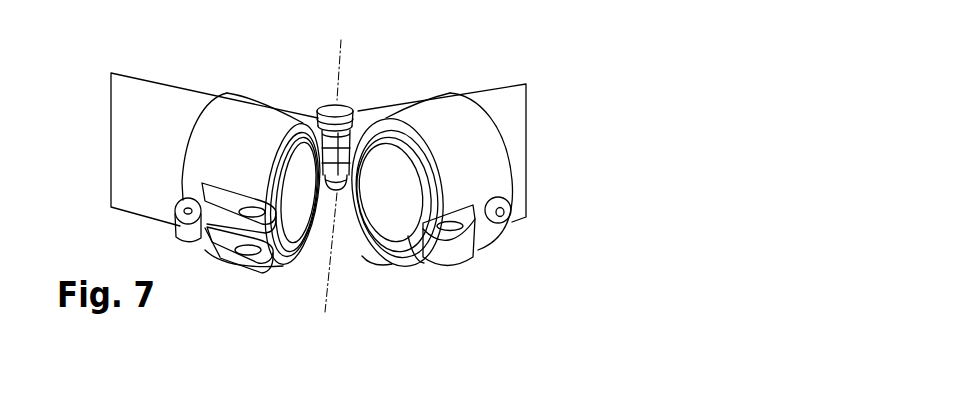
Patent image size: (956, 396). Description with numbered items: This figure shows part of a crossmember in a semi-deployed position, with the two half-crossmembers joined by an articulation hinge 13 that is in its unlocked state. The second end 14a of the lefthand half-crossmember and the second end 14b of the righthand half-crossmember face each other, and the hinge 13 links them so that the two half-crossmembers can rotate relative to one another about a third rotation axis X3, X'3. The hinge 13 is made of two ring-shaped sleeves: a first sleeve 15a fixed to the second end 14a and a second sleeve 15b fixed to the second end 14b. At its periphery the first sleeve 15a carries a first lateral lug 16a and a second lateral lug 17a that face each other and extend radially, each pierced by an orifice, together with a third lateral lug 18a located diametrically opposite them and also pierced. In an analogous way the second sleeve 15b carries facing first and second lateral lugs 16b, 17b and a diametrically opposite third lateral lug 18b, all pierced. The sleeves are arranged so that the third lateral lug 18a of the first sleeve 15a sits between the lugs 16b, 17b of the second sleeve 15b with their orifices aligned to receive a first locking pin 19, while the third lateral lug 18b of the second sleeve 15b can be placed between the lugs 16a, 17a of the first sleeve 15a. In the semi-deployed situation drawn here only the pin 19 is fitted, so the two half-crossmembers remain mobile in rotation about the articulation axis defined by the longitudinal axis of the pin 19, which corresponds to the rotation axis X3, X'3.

The articulation hinge 13 is at (518, 238).
The second end of the first half-crossmember 14a is at (167, 117).
The second end of the second half-crossmember 14b is at (513, 123).
The first sleeve 15a is at (268, 125).
The second sleeve 15b is at (427, 123).
The first lateral lug of the first sleeve 16a is at (210, 257).
The first lateral lug of the second sleeve 16b is at (366, 128).
The second lateral lug of the first sleeve 17a is at (244, 266).
The second lateral lug of the second sleeve 17b is at (330, 200).
The third lateral lug of the first sleeve 18a is at (350, 167).
The third lateral lug of the second sleeve 18b is at (458, 250).
The first locking pin 19 is at (317, 113).
The third rotation axis X3 is at (357, 57).
The third rotation axis X'3 is at (328, 269).